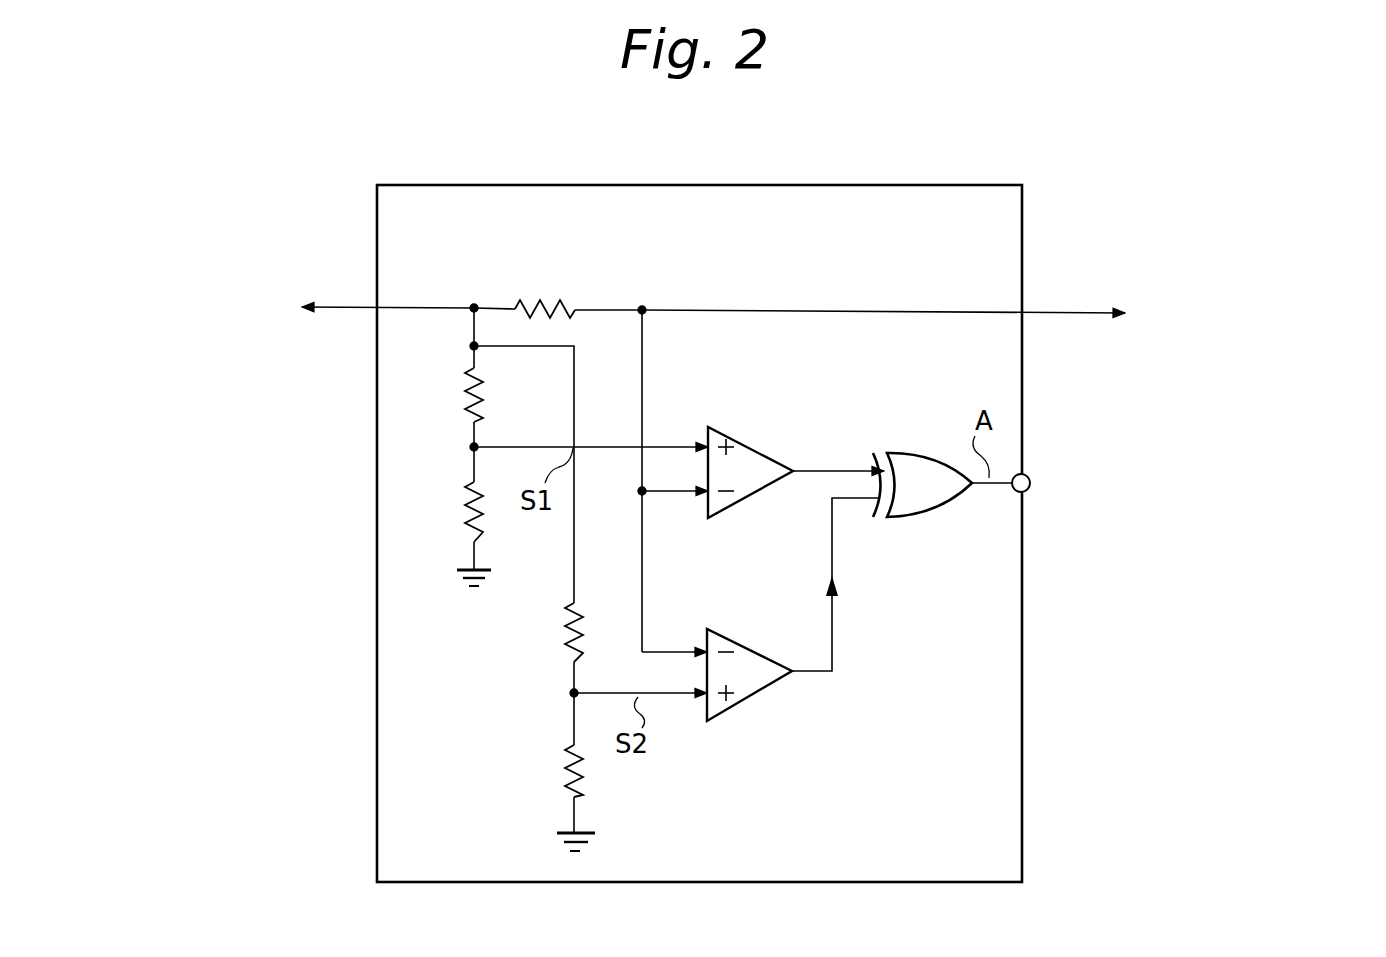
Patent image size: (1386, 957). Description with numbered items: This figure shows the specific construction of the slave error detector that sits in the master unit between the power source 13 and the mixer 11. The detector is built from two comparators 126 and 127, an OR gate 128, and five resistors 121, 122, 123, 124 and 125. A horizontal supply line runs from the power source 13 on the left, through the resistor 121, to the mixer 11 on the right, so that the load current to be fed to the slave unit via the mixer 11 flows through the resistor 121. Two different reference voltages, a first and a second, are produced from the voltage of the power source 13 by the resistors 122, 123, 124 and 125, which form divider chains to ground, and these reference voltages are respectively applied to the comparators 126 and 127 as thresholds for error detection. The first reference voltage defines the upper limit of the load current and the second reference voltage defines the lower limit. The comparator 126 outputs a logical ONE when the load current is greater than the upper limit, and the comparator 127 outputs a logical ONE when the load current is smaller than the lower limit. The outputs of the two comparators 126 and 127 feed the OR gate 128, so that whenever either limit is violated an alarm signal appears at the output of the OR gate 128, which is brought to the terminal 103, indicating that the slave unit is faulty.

The mixer 11 is at (978, 312).
The power source 13 is at (303, 303).
The output terminal 103 is at (1031, 486).
The resistor 121 is at (577, 280).
The resistor 122 is at (468, 392).
The resistor 123 is at (466, 510).
The resistor 124 is at (566, 629).
The resistor 125 is at (568, 769).
The comparator 126 is at (760, 447).
The comparator 127 is at (757, 696).
The OR gate 128 is at (922, 520).